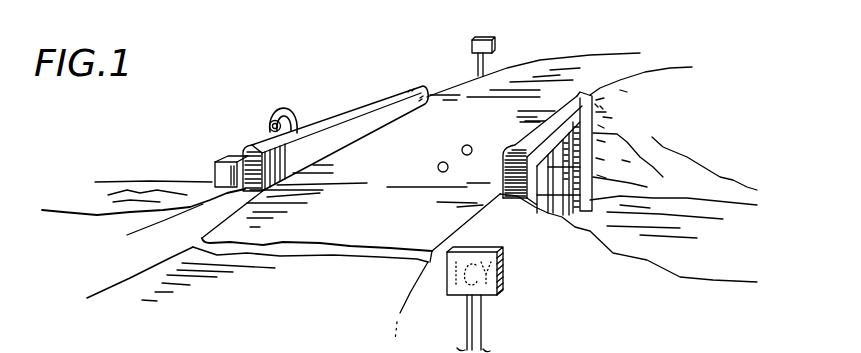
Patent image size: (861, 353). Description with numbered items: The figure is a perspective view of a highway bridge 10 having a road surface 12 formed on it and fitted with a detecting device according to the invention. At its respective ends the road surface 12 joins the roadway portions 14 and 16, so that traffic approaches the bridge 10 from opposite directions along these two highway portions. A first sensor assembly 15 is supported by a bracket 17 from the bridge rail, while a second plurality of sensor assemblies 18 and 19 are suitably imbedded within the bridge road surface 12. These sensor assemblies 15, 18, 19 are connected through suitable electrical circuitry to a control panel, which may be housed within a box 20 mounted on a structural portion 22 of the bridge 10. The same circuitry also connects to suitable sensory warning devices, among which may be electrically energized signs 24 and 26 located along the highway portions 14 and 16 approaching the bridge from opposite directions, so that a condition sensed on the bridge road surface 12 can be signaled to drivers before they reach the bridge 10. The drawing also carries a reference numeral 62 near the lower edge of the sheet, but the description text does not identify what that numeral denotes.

The highway bridge 10 is at (358, 105).
The road surface 12 is at (376, 164).
The roadway portion 14 is at (602, 68).
The first sensor assembly 15 is at (258, 138).
The roadway portion 16 is at (153, 287).
The bracket 17 is at (285, 106).
The sensor assembly 18 is at (467, 145).
The sensor assembly 19 is at (437, 167).
The box 20 is at (223, 176).
The structural portion 22 is at (243, 153).
The sign 24 is at (495, 43).
The sign 26 is at (503, 278).
The control cable 62 is at (377, 307).